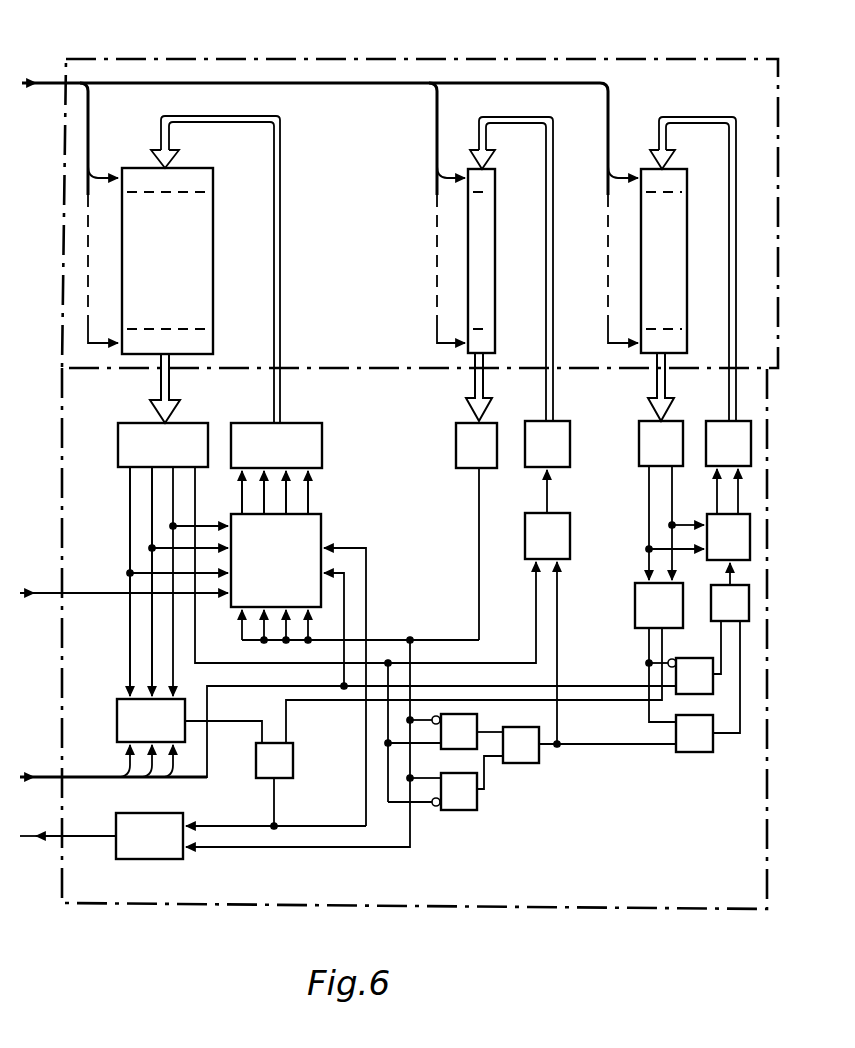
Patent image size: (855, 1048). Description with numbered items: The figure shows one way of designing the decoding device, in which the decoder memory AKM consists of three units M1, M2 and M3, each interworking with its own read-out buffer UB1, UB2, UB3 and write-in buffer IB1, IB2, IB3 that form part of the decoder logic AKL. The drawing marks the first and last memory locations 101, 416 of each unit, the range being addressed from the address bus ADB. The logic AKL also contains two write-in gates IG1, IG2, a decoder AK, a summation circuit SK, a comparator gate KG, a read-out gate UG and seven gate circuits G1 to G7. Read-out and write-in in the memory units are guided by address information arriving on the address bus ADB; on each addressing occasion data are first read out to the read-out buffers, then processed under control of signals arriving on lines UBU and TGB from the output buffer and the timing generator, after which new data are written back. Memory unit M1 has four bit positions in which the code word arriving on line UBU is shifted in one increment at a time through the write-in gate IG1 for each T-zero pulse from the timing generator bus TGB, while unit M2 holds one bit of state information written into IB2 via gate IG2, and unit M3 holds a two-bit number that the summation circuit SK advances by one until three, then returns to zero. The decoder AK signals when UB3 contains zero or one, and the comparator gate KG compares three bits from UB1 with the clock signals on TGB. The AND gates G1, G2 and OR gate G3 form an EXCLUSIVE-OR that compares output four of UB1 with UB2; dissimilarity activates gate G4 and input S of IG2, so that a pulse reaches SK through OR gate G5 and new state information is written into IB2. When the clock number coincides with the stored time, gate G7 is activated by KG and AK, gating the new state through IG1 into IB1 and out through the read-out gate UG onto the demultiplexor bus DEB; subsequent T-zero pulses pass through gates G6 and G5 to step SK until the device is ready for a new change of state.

The first memory location (address 101) 101 is at (367, 163).
The last memory location (address 416) 416 is at (366, 331).
The memory unit M1 is at (213, 236).
The memory unit M2 is at (495, 236).
The memory unit M3 is at (687, 236).
The read-out buffer UB1 is at (118, 440).
The read-out buffer UB2 is at (456, 440).
The read-out buffer UB3 is at (639, 452).
The write-in buffer IB1 is at (322, 440).
The write-in buffer IB2 is at (570, 440).
The write-in buffer IB3 is at (706, 426).
The write-in gate IG1 is at (321, 528).
The write-in gate IG2 is at (570, 528).
The summation circuit SK is at (713, 514).
The decoder AK is at (635, 600).
The AND gate G1 is at (477, 720).
The AND gate G2 is at (477, 806).
The OR gate G3 is at (533, 763).
The AND gate G4 is at (698, 752).
The OR gate G5 is at (711, 592).
The AND gate G6 is at (699, 658).
The AND gate G7 is at (300, 760).
The comparator gate KG is at (117, 715).
The read-out gate UG is at (116, 822).
The address bus ADB is at (312, 187).
The output buffer line UBU is at (121, 587).
The timing generator bus TGB is at (343, 731).
The demultiplexor bus DEB is at (62, 822).
The decoder memory AKM is at (649, 58).
The decoder logic AKL is at (693, 909).